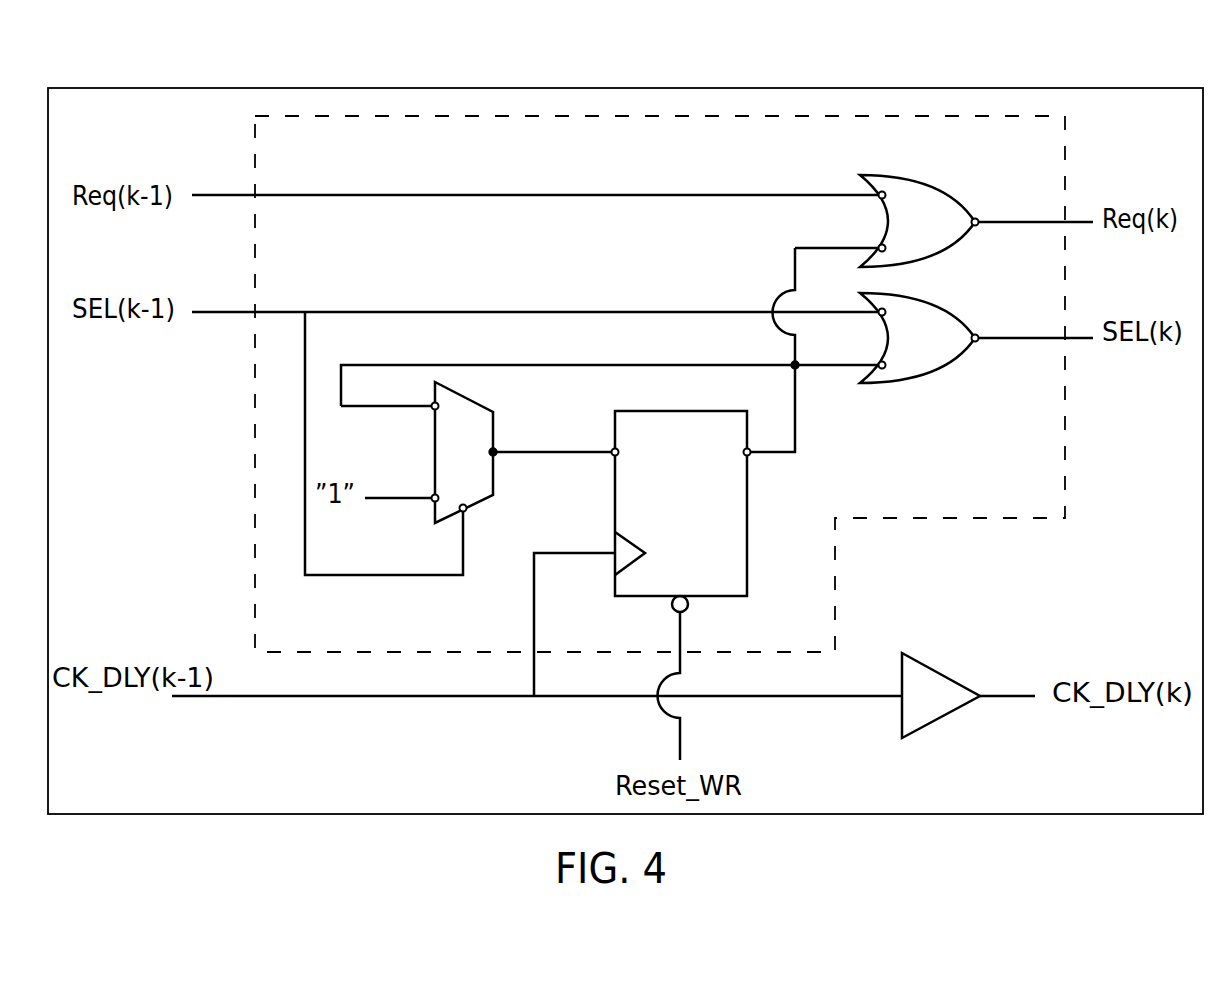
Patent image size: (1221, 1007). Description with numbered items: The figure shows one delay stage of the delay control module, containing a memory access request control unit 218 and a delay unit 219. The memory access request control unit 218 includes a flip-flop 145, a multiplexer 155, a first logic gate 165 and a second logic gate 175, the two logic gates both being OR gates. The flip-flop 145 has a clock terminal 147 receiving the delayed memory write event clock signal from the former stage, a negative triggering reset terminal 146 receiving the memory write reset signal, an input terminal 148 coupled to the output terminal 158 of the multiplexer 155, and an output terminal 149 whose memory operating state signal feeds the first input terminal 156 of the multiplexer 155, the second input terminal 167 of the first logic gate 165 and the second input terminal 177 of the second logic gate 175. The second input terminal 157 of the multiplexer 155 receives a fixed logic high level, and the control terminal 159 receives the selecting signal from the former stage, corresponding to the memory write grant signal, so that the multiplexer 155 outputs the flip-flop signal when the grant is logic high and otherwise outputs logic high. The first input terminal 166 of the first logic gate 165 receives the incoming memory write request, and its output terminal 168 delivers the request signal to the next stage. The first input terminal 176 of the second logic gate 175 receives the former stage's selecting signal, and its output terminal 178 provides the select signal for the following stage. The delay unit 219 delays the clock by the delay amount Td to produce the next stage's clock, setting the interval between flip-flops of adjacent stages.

The memory access request control unit 218 is at (255, 396).
The flip-flop 145 is at (681, 411).
The reset terminal 146 is at (684, 612).
The clock terminal 147 is at (614, 551).
The input terminal 148 is at (617, 456).
The output terminal 149 is at (749, 456).
The multiplexer 155 is at (495, 428).
The first input terminal 156 is at (434, 404).
The second input terminal 157 is at (434, 496).
The output terminal 158 is at (494, 455).
The control terminal 159 is at (466, 511).
The first logic gate 165 is at (962, 205).
The first input terminal 166 is at (880, 197).
The second input terminal 167 is at (880, 246).
The output terminal 168 is at (978, 224).
The second logic gate 175 is at (962, 321).
The first input terminal 176 is at (880, 314).
The second input terminal 177 is at (880, 363).
The output terminal 178 is at (978, 340).
The delay unit 219 is at (940, 668).